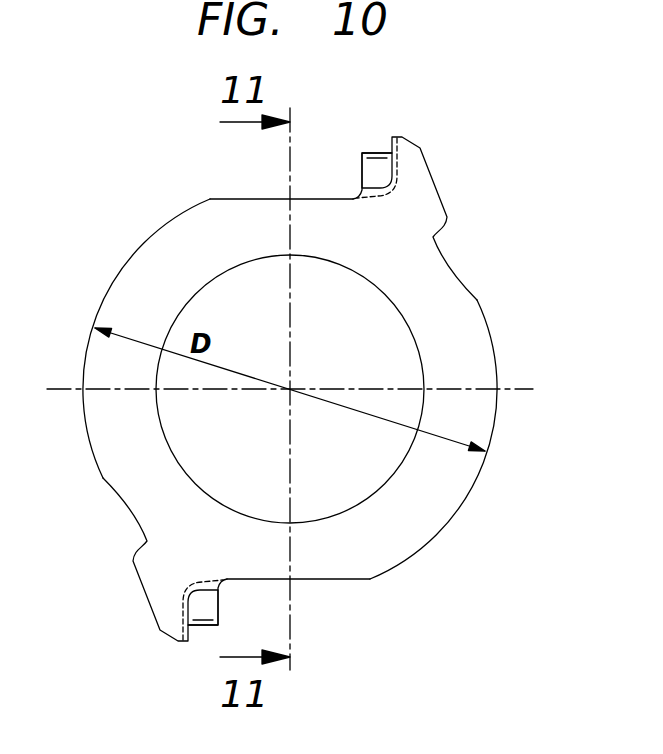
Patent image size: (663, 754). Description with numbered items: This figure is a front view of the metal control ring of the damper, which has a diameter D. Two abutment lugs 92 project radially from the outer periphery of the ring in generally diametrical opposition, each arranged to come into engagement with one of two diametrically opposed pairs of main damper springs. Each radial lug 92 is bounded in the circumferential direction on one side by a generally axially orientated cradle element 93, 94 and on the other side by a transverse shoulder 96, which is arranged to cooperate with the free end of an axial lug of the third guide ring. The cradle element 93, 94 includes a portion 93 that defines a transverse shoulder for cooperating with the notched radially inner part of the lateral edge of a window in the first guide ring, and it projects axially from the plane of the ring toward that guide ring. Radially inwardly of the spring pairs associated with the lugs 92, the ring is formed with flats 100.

The abutment lug 92 is at (158, 590).
The transverse shoulder portion of cradle element 93 is at (384, 137).
The cradle element portion 94 is at (361, 176).
The transverse shoulder 96 is at (453, 237).
The flats 100 is at (232, 199).